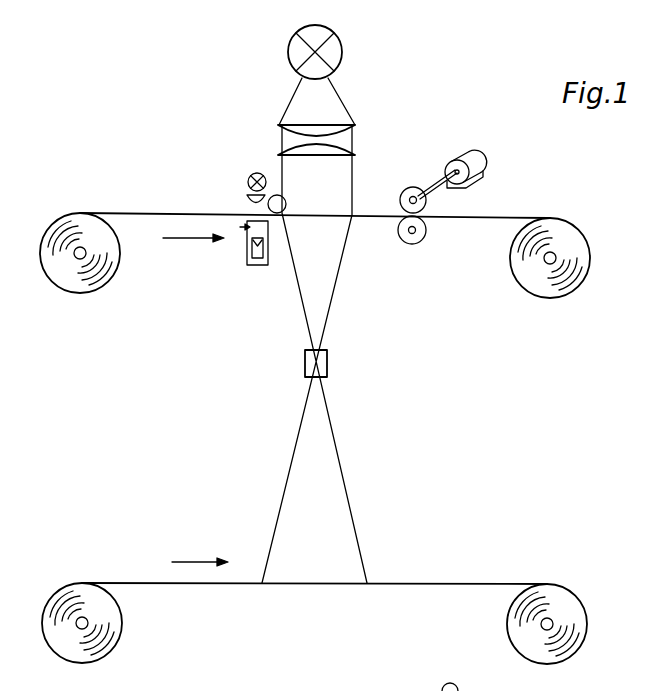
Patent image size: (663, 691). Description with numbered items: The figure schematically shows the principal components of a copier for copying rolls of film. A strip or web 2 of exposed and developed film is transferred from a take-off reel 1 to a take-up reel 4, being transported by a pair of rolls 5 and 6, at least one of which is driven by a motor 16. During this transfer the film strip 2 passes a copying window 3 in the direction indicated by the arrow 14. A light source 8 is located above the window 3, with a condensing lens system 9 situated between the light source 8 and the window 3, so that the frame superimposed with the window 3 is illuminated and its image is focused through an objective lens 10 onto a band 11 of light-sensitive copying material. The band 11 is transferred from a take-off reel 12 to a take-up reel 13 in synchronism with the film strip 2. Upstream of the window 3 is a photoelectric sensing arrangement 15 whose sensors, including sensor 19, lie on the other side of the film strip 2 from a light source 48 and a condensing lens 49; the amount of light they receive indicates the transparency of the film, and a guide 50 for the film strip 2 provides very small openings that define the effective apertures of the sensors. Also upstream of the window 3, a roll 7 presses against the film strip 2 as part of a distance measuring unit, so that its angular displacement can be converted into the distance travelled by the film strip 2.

The take-off reel 1 is at (83, 235).
The film strip 2 is at (152, 212).
The copying window 3 is at (345, 234).
The take-up reel 4 is at (563, 236).
The roll 5 is at (412, 195).
The roll 6 is at (420, 238).
The roll 7 is at (273, 195).
The light source 8 is at (340, 51).
The condensing lens system 9 is at (355, 145).
The objective lens 10 is at (328, 360).
The band of light-sensitive copying material 11 is at (303, 584).
The take-off reel 12 is at (67, 647).
The take-up reel 13 is at (558, 606).
The arrow 14 is at (185, 240).
The photoelectric sensing arrangement 15 is at (268, 294).
The motor 16 is at (471, 155).
The photoelectric sensor 19 is at (247, 250).
The light source 48 is at (249, 177).
The condensing lens 49 is at (247, 199).
The guide 50 is at (233, 230).